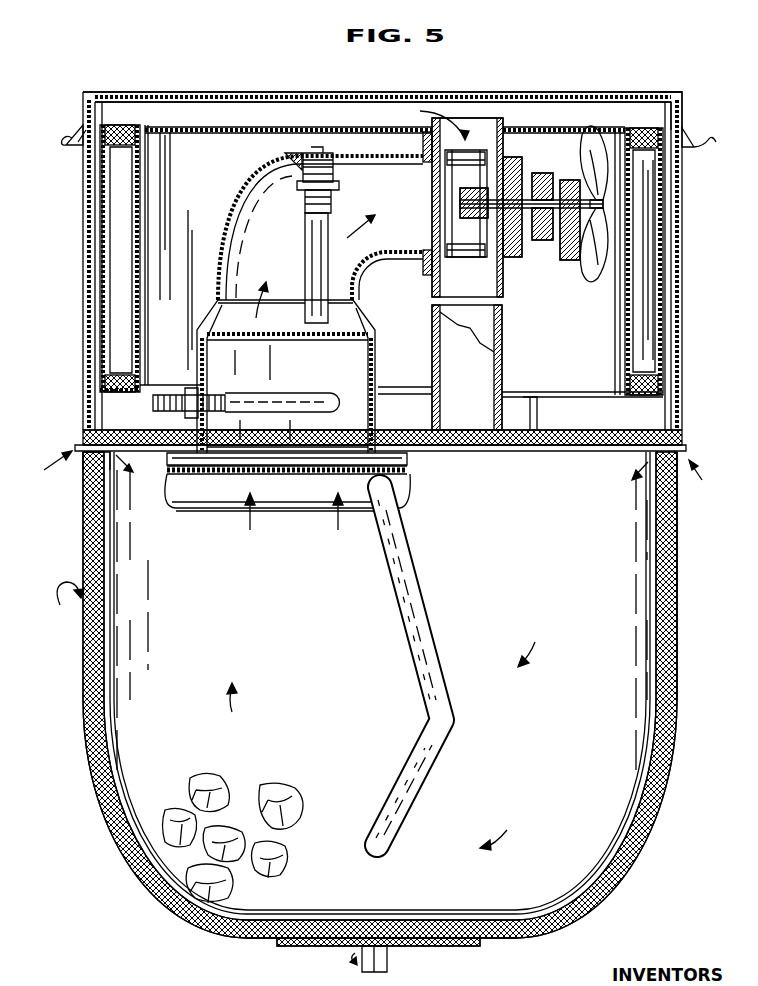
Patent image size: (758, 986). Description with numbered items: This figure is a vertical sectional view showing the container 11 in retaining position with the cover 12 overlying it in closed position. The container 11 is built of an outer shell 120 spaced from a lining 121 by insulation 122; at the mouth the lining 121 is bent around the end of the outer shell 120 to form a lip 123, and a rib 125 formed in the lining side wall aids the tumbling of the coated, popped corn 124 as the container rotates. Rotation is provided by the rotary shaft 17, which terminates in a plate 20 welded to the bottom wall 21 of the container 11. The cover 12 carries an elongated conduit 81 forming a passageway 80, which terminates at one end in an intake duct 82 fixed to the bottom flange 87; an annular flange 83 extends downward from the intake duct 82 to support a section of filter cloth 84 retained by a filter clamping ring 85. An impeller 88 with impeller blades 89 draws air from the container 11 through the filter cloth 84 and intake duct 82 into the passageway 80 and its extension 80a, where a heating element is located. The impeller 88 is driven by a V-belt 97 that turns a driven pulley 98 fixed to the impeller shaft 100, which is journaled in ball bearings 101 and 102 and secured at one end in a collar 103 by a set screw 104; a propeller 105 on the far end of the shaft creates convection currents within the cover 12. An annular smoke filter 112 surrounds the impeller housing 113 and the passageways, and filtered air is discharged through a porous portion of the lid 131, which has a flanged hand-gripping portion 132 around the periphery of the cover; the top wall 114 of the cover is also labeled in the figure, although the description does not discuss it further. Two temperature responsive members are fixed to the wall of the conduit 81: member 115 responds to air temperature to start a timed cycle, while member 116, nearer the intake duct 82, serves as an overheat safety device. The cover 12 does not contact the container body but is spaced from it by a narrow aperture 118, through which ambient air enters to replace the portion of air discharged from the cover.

The container 11 is at (684, 632).
The cover 12 is at (682, 316).
The rotary shaft 17 is at (390, 960).
The plate 20 is at (466, 947).
The bottom wall 21 is at (268, 939).
The passageway 80 is at (386, 192).
The passageway extension 80a is at (482, 287).
The elongated conduit 81 is at (240, 220).
The intake duct 82 is at (240, 455).
The annular flange 83 is at (418, 463).
The filter cloth 84 is at (305, 477).
The filter clamping ring 85 is at (312, 511).
The bottom flange 87 is at (95, 434).
The impeller 88 is at (446, 121).
The impeller blades 89 is at (460, 160).
The V-belt 97 is at (542, 175).
The driven pulley 98 is at (570, 255).
The impeller shaft 100 is at (542, 235).
The ball bearing 101 is at (516, 175).
The ball bearing 102 is at (590, 160).
The collar 103 is at (473, 217).
The set screw 104 is at (460, 203).
The propeller 105 is at (598, 280).
The annular smoke filter 112 is at (165, 137).
The impeller housing 113 is at (500, 125).
The lid top wall 114 is at (449, 93).
The temperature responsive member 115 is at (310, 265).
The temperature responsive member 116 is at (277, 386).
The aperture 118 is at (66, 446).
The outer shell 120 is at (680, 590).
The lining 121 is at (646, 708).
The insulation 122 is at (680, 705).
The lip 123 is at (80, 468).
The coated popped corn 124 is at (222, 786).
The rib 125 is at (436, 606).
The lid 131 is at (682, 94).
The flanged hand-gripping portion 132 is at (62, 146).